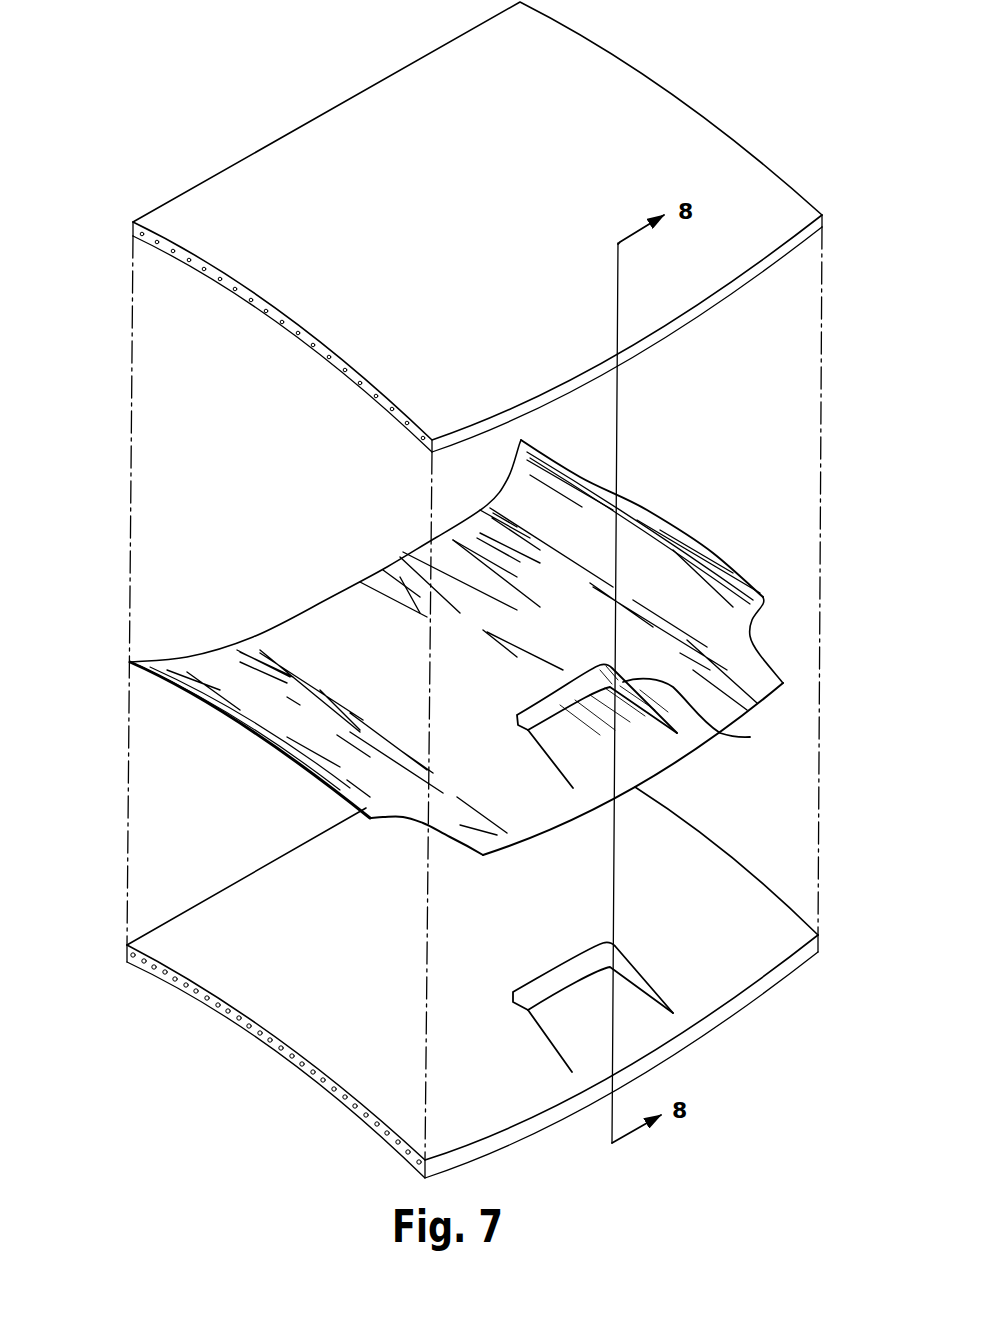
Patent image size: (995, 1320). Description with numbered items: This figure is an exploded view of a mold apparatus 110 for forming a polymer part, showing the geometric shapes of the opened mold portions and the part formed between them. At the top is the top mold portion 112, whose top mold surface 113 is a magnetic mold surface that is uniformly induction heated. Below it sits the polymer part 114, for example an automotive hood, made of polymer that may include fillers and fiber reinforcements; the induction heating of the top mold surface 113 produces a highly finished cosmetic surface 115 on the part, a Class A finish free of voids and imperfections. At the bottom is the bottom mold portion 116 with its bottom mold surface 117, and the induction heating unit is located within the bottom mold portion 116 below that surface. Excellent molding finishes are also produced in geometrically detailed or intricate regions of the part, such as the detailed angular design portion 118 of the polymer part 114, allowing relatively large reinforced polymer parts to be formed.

The mold apparatus 110 is at (225, 91).
The top mold portion 112 is at (185, 179).
The top mold surface 113 is at (227, 290).
The polymer part 114 is at (108, 678).
The cosmetic surface 115 is at (213, 673).
The bottom mold portion 116 is at (105, 958).
The bottom mold surface 117 is at (180, 940).
The detailed angular design portion 118 is at (720, 734).